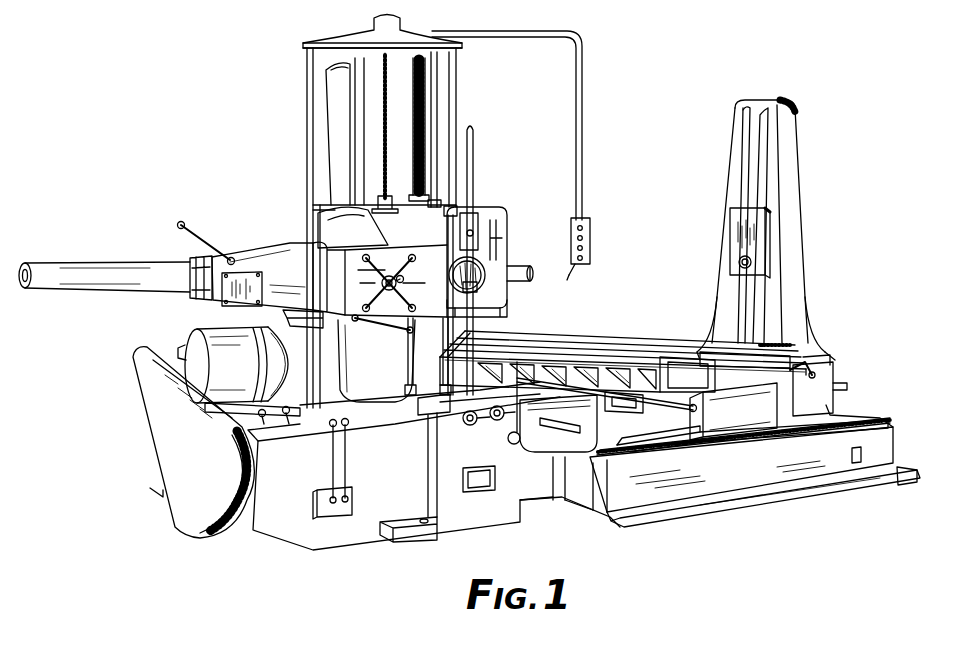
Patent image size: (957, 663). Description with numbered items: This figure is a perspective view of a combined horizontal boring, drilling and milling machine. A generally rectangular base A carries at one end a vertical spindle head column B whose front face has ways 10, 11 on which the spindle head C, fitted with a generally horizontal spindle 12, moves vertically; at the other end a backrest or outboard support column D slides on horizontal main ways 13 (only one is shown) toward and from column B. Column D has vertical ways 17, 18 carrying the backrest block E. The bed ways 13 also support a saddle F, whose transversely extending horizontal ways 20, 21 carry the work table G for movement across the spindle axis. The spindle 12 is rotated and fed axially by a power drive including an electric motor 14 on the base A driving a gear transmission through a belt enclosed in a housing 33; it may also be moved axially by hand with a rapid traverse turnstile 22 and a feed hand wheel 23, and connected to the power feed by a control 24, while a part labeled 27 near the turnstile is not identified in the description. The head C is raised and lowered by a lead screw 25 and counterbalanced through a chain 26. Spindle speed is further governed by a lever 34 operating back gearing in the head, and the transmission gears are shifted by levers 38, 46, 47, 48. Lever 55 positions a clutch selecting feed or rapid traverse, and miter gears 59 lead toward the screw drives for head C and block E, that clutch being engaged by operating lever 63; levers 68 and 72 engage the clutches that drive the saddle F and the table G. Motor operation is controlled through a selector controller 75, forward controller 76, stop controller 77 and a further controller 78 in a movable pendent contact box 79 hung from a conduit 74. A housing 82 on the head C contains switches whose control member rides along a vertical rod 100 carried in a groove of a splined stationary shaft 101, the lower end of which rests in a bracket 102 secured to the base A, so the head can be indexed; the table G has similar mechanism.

The base A is at (882, 452).
The spindle head column B is at (338, 90).
The spindle head C is at (258, 258).
The outboard support column D is at (792, 156).
The backrest block E is at (756, 238).
The saddle F is at (784, 420).
The work table G is at (636, 334).
The way 10 is at (397, 115).
The way 11 is at (433, 108).
The spindle 12 is at (512, 266).
The main ways 13 is at (556, 410).
The electric motor 14 is at (221, 332).
The vertical way 17 is at (767, 188).
The vertical way 18 is at (743, 155).
The horizontal way 20 is at (735, 404).
The horizontal way 21 is at (795, 400).
The rapid traverse turnstile 22 is at (396, 262).
The feed hand wheel 23 is at (507, 309).
The control 24 is at (186, 210).
The lead screw 25 is at (421, 135).
The chain 26 is at (385, 162).
The handwheel handle 27 is at (400, 282).
The housing 33 is at (146, 388).
The lever 34 is at (381, 331).
The lever 38 is at (317, 492).
The lever 46 is at (236, 415).
The lever 47 is at (263, 418).
The lever 48 is at (289, 415).
The lever 55 is at (527, 428).
The miter gears 59 is at (348, 477).
The operating lever 63 is at (422, 412).
The lever 68 is at (470, 425).
The lever 72 is at (497, 420).
The conduit 74 is at (582, 152).
The selector controller 75 is at (583, 227).
The forward controller 76 is at (583, 237).
The stop controller 77 is at (583, 247).
The controller 78 is at (583, 257).
The pendent contact box 79 is at (577, 283).
The housing 82 is at (507, 212).
The rod 100 is at (474, 160).
The splined stationary shaft 101 is at (470, 192).
The bracket 102 is at (428, 440).